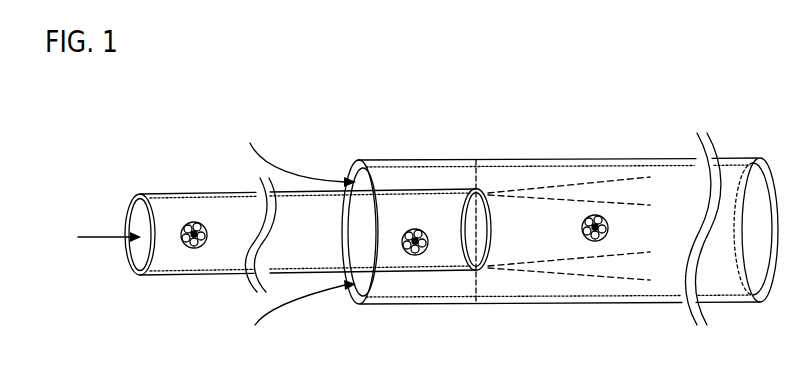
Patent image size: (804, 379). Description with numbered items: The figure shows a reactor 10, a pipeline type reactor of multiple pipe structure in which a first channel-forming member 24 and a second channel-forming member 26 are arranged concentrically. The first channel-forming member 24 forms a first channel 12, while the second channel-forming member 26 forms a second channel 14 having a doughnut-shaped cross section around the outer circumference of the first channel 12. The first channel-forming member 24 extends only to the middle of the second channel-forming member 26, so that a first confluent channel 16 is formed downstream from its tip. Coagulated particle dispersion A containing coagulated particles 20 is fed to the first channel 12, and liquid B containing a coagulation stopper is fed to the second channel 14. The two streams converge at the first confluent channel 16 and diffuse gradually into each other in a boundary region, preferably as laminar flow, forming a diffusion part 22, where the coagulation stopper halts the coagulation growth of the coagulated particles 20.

The reactor 10 is at (319, 132).
The first channel 12 is at (393, 210).
The second channel 14 is at (430, 180).
The first confluent channel 16 is at (507, 182).
The coagulated particles 20 is at (417, 257).
The diffusion part 22 is at (600, 266).
The first channel-forming member 24 is at (225, 193).
The second channel-forming member 26 is at (607, 158).